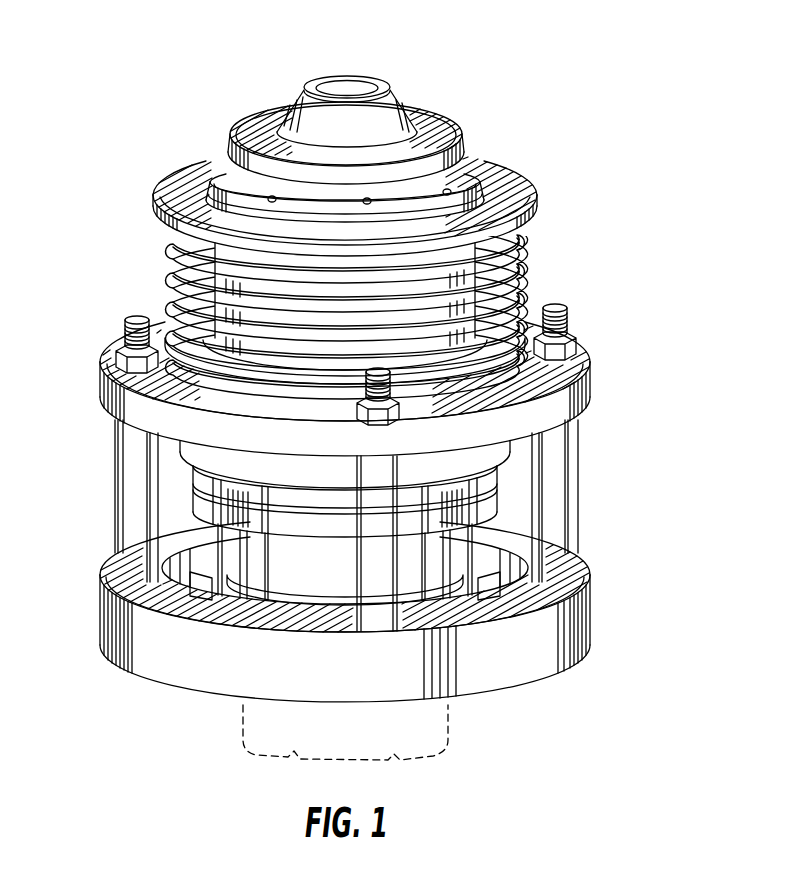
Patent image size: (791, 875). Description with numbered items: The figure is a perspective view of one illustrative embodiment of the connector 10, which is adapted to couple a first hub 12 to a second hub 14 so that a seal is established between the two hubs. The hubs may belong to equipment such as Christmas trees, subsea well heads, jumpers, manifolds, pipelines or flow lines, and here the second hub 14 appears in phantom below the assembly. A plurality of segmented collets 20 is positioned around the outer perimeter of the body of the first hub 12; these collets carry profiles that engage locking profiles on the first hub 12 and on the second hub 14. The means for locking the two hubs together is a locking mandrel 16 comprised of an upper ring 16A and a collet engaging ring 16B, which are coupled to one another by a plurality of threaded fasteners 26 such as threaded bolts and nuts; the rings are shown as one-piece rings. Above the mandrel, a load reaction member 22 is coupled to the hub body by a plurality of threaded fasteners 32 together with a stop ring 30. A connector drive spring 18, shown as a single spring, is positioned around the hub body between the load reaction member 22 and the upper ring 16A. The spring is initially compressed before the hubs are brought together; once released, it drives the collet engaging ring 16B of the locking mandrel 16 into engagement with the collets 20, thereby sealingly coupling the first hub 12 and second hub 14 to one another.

The connector 10 is at (351, 407).
The first hub 12 is at (468, 160).
The second hub 14 is at (450, 723).
The locking mandrel 16 is at (351, 503).
The upper ring 16A is at (585, 392).
The collet engaging ring 16B is at (573, 623).
The connector drive spring 18 is at (503, 257).
The segmented collets 20 is at (228, 551).
The load reaction member 22 is at (537, 205).
The threaded fasteners 26 is at (117, 492).
The stop ring 30 is at (187, 457).
The fasteners 32 is at (269, 199).